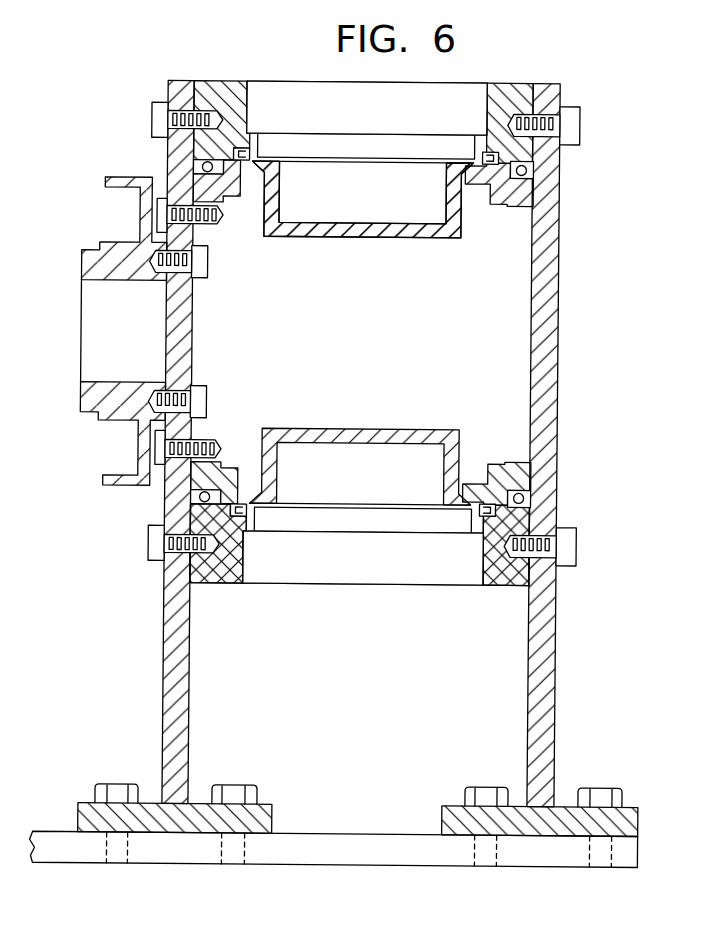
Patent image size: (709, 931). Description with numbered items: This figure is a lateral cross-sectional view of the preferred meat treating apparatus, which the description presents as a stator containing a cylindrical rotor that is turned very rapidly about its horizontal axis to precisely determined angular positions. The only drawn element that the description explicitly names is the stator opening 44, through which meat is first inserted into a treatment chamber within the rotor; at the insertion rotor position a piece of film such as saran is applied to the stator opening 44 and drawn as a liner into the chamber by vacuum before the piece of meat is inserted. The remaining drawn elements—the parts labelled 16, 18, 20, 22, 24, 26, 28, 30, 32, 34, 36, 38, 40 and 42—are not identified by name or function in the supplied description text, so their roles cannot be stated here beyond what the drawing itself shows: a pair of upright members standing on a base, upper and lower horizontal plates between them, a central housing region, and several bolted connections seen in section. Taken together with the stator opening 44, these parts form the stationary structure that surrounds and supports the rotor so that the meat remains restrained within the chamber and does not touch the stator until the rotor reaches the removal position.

The bearing housing 16 is at (520, 224).
The upper bearing 18 is at (526, 168).
The lower bearing 20 is at (517, 492).
The lower seal 22 is at (538, 516).
The upper seal 24 is at (531, 155).
The upper bolt 26 is at (567, 108).
The lower bolt 28 is at (575, 546).
The lower plate 30 is at (500, 575).
The support column 32 is at (549, 672).
The anchor bolts 34 is at (600, 786).
The pedestal block 36 is at (632, 808).
The base plate 38 is at (634, 848).
The bracket bolt 40 is at (216, 261).
The bracket bolt 42 is at (207, 404).
The stator opening 44 is at (449, 104).